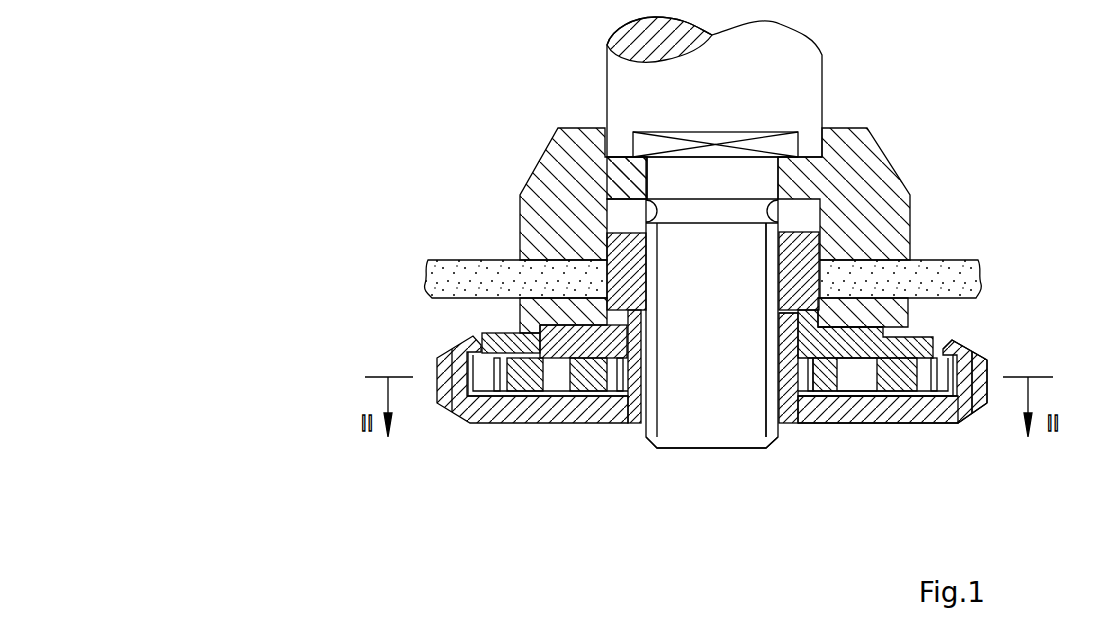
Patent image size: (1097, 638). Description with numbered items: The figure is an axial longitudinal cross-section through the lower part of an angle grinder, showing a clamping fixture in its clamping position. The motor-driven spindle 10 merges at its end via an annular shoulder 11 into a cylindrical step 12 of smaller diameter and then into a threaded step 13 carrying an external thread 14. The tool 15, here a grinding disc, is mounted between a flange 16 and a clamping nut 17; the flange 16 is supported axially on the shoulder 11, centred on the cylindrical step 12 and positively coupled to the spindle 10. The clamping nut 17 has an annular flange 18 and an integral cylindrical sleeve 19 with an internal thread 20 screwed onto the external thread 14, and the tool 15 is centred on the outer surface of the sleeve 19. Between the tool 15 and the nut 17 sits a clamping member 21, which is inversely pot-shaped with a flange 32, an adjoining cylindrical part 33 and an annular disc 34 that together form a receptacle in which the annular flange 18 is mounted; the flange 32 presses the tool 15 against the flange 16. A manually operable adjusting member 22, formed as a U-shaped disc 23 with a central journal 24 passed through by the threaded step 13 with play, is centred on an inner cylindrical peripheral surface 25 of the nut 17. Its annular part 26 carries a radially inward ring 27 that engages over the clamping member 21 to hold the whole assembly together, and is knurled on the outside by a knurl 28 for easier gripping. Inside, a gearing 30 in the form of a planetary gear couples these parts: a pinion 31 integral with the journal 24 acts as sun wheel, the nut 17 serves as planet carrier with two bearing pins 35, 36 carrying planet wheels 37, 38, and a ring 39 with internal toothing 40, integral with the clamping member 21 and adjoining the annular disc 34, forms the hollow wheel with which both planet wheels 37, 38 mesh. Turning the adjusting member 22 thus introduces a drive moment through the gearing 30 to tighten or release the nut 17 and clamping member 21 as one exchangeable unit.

The spindle 10 is at (605, 82).
The annular shoulder 11 is at (638, 173).
The cylindrical step 12 is at (660, 177).
The threaded step 13 is at (682, 413).
The external thread 14 is at (768, 412).
The tool 15 is at (932, 275).
The flange 16 is at (552, 195).
The clamping nut 17 is at (860, 337).
The annular flange 18 is at (870, 372).
The cylindrical sleeve 19 is at (801, 243).
The internal thread 20 is at (772, 267).
The clamping member 21 is at (927, 311).
The adjusting member 22 is at (975, 421).
The disc 23 is at (926, 410).
The journal 24 is at (790, 337).
The inner cylindrical peripheral surface 25 is at (791, 355).
The annular part 26 is at (980, 362).
The ring 27 is at (952, 350).
The knurl 28 is at (981, 405).
The gearing 30 is at (470, 328).
The pinion 31 is at (618, 385).
The flange 32 is at (853, 308).
The cylindrical part 33 is at (518, 332).
The annular disc 34 is at (500, 337).
The bearing pin 35 is at (553, 380).
The bearing pin 36 is at (905, 380).
The planet wheel 37 is at (582, 380).
The planet wheel 38 is at (831, 385).
The ring 39 is at (492, 374).
The internal toothing 40 is at (497, 378).